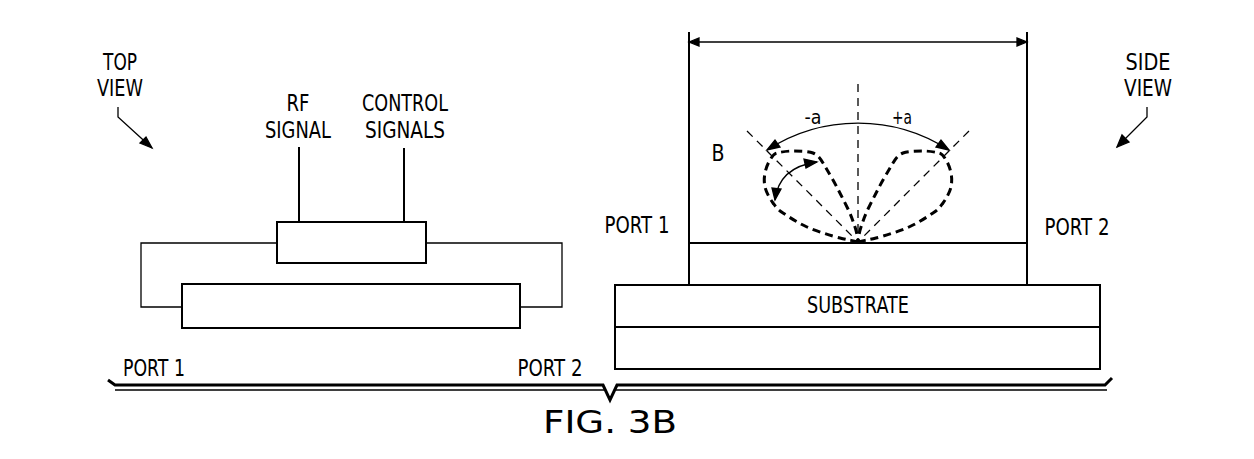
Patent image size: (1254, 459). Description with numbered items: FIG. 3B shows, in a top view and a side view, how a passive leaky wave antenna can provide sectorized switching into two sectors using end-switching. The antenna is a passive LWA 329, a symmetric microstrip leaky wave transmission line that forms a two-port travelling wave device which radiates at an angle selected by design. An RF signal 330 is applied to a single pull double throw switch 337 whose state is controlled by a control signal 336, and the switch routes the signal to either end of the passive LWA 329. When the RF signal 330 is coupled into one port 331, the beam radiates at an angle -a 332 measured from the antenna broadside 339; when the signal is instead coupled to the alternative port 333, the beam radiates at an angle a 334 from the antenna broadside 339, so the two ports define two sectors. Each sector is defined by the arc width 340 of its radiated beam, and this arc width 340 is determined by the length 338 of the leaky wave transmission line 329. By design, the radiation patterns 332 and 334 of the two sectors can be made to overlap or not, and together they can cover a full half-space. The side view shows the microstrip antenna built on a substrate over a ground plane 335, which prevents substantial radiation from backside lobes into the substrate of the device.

The passive leaky wave antenna 329 is at (352, 328).
The RF signal 330 is at (298, 183).
The port 331 is at (178, 313).
The angle -a radiation pattern 332 is at (767, 193).
The alternative port 333 is at (527, 313).
The angle a radiation pattern 334 is at (950, 178).
The ground plane 335 is at (1100, 348).
The control signal 336 is at (405, 185).
The single pull double throw switch 337 is at (353, 220).
The length 338 is at (785, 43).
The antenna broadside 339 is at (860, 98).
The arc width 340 is at (767, 178).